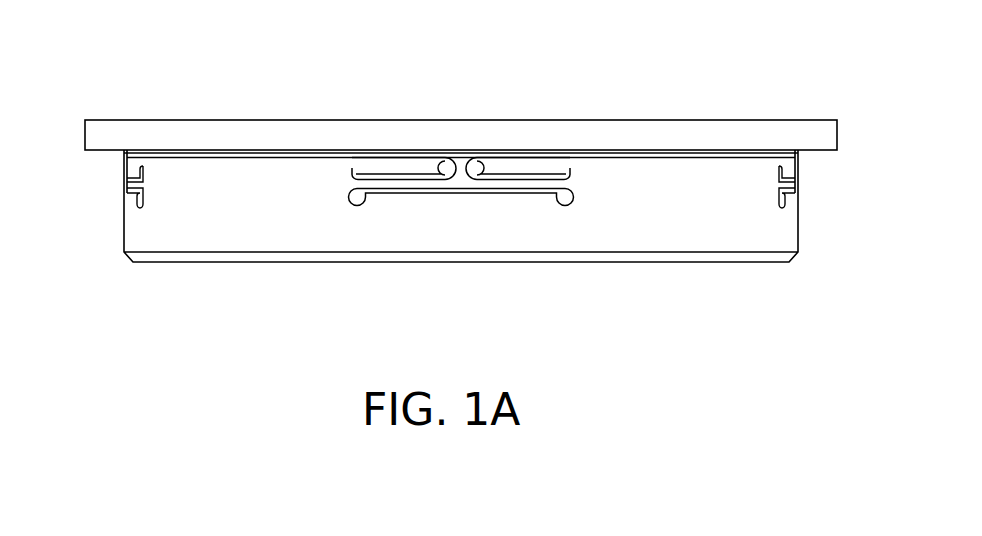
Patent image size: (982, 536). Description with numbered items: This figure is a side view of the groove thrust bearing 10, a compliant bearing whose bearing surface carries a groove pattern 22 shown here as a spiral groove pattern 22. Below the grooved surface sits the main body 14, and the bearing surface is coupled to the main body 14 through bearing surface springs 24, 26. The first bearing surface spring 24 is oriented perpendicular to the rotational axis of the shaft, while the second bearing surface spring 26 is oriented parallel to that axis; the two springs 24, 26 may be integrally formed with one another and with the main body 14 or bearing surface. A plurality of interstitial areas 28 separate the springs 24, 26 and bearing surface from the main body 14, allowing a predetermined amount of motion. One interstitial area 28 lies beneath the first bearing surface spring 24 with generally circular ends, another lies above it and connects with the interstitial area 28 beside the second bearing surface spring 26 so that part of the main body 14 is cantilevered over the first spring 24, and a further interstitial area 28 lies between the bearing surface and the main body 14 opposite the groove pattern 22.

The groove thrust bearing 10 is at (632, 295).
The main body 14 is at (300, 208).
The groove pattern 22 is at (197, 120).
The first bearing surface spring 24 is at (378, 183).
The second bearing surface spring 26 is at (461, 166).
The interstitial area 28 is at (127, 189).